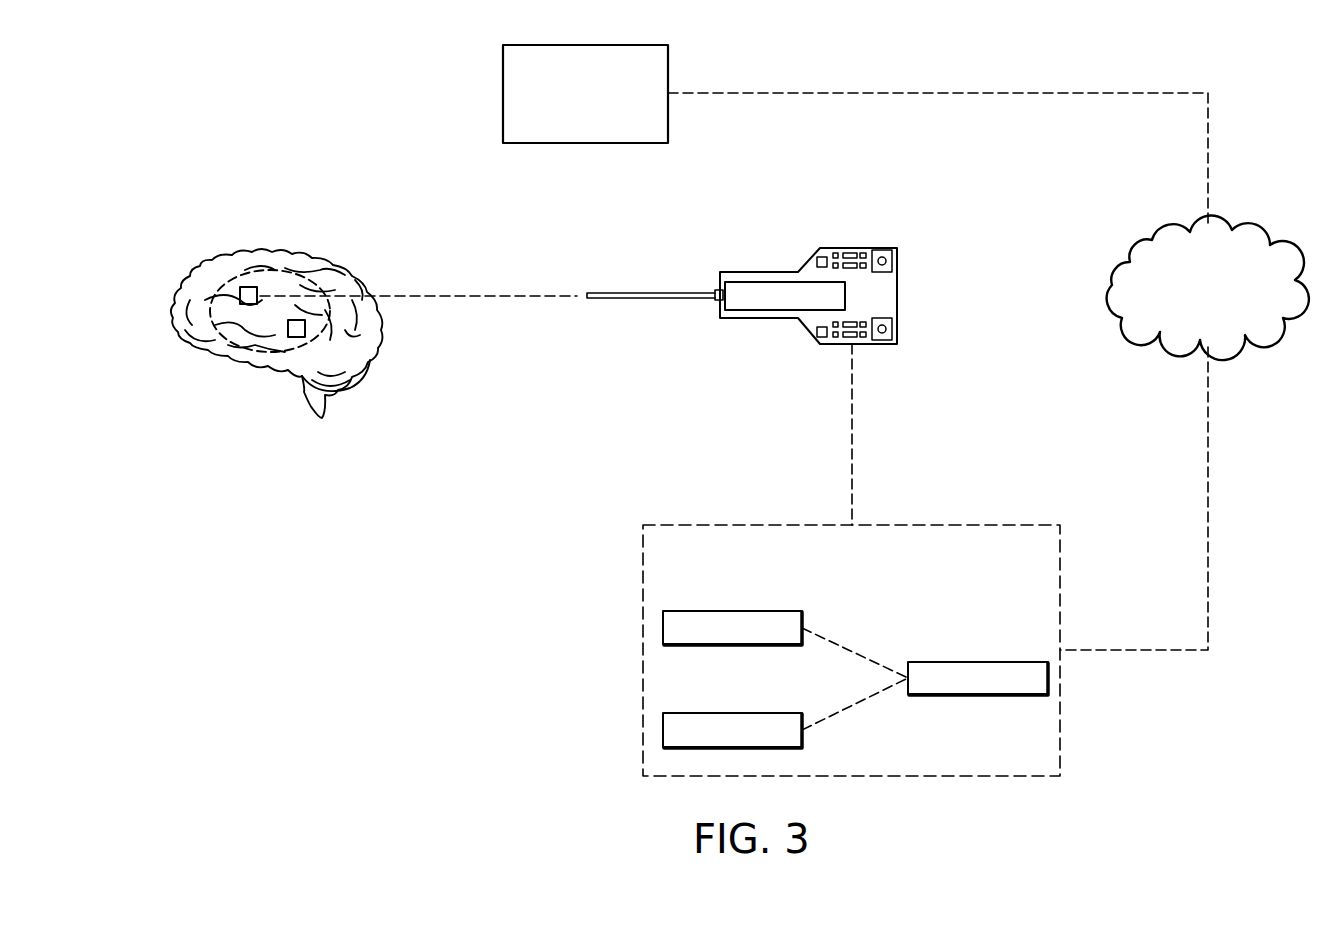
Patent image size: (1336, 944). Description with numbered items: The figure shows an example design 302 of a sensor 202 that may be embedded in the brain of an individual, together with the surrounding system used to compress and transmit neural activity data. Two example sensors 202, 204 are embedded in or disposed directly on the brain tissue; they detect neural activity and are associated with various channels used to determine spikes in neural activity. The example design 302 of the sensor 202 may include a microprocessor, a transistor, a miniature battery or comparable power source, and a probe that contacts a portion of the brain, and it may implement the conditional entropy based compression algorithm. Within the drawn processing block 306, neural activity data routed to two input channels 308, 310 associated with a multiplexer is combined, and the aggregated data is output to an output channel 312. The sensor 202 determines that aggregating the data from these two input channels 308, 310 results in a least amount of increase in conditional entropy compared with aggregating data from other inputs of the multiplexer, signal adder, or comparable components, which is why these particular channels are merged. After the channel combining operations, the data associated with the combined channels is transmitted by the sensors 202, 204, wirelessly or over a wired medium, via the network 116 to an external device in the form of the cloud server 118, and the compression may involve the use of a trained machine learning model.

The network 116 is at (1252, 225).
The cloud server 118 is at (503, 95).
The sensor 202 is at (247, 287).
The sensor 204 is at (296, 337).
The example design 302 is at (850, 248).
The processing system 306 is at (990, 525).
The input channel 308 is at (733, 611).
The input channel 310 is at (733, 713).
The output channel 312 is at (978, 662).